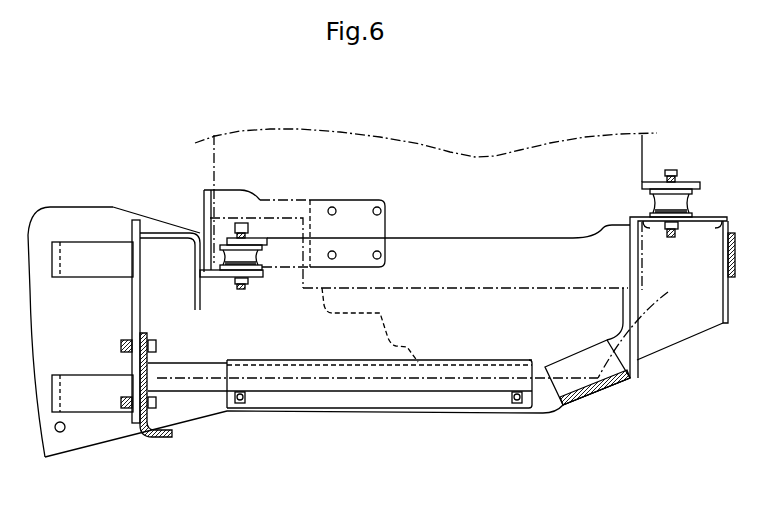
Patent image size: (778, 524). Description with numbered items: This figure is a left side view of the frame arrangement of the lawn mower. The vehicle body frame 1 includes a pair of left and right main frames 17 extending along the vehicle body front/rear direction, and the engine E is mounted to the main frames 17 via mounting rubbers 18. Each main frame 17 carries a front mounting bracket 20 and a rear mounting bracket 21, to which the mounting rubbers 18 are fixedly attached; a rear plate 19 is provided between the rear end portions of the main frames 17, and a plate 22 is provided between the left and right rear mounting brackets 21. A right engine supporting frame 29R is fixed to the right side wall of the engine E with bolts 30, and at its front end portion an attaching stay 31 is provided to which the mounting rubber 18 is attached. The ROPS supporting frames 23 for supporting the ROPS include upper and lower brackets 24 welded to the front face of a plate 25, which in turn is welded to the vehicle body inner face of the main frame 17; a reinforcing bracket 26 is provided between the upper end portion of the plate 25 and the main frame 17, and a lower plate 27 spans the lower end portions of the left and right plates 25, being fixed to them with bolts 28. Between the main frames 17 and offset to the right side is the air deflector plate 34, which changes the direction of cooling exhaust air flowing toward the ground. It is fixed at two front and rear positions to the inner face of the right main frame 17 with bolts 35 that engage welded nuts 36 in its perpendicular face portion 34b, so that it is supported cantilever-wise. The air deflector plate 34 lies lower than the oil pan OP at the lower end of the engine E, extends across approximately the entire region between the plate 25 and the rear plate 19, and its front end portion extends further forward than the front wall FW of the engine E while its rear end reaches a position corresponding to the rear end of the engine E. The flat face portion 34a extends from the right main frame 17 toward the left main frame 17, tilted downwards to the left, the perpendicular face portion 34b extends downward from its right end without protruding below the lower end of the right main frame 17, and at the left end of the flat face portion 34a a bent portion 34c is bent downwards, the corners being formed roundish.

The vehicle body frame 1 is at (70, 205).
The main frame 17 is at (180, 417).
The mounting rubber 18 is at (252, 256).
The rear plate 19 is at (595, 400).
The front mounting bracket 20 is at (210, 277).
The rear mounting bracket 21 is at (633, 216).
The plate 22 is at (728, 326).
The ROPS supporting frame 23 is at (89, 416).
The bracket 24 is at (97, 243).
The plate 25 is at (137, 220).
The reinforcing bracket 26 is at (163, 233).
The lower plate 27 is at (163, 438).
The bolt 28 is at (156, 400).
The right engine supporting frame 29R is at (335, 192).
The bolt 30 is at (380, 252).
The attaching stay 31 is at (268, 237).
The air deflector plate 34 is at (340, 389).
The flat face portion 34a is at (335, 370).
The perpendicular face portion 34b is at (388, 406).
The bent portion 34c is at (433, 389).
The bolt 35 is at (240, 405).
The welded nut 36 is at (245, 399).
The front wall FW is at (212, 160).
The engine E is at (643, 157).
The oil pan OP is at (645, 325).